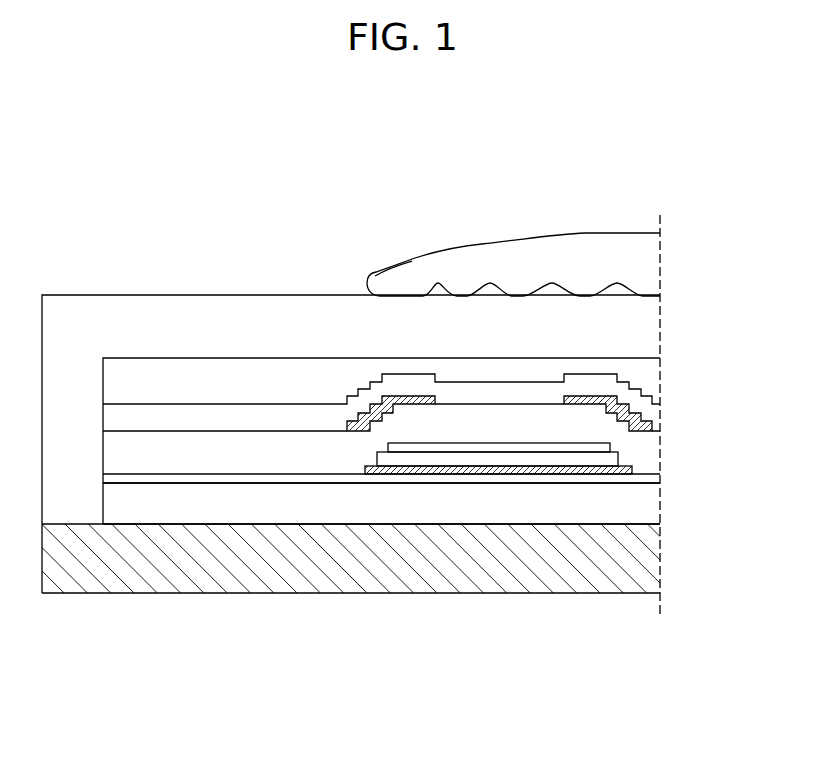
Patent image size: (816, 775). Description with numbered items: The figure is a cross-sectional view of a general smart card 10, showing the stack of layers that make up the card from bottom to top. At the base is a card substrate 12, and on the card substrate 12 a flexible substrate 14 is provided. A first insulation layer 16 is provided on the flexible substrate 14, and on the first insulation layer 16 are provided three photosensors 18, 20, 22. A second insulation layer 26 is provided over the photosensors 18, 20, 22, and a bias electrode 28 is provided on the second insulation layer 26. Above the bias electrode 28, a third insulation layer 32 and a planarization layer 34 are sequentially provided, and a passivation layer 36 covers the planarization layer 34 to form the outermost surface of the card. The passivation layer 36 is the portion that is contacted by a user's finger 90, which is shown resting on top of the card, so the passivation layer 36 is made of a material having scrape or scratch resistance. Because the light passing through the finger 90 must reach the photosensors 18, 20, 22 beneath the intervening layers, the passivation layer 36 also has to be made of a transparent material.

The smart card 10 is at (91, 184).
The card substrate 12 is at (645, 558).
The flexible substrate 14 is at (648, 506).
The first insulation layer 16 is at (655, 479).
The photosensor 18 is at (633, 469).
The photosensor 20 is at (522, 457).
The photosensor 22 is at (445, 447).
The second insulation layer 26 is at (567, 549).
The bias electrode 28 is at (648, 427).
The third insulation layer 32 is at (652, 414).
The planarization layer 34 is at (643, 378).
The passivation layer 36 is at (643, 333).
The finger 90 is at (643, 263).